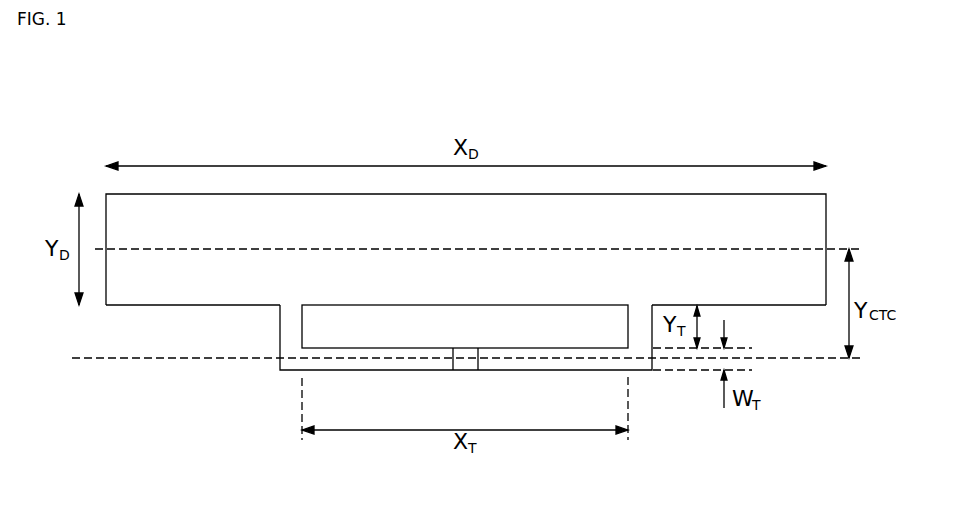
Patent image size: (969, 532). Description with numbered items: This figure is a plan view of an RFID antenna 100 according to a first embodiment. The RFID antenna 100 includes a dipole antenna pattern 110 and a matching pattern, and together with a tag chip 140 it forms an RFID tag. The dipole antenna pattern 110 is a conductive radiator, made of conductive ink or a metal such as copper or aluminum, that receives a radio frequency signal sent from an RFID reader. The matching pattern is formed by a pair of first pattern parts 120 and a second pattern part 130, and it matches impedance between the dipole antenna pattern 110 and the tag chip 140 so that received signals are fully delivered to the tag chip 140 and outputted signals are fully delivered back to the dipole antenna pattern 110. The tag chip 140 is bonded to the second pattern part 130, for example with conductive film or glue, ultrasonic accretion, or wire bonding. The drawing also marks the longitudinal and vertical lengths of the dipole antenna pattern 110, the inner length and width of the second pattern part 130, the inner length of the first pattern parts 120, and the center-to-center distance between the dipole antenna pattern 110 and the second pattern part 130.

The RFID antenna 100 is at (98, 96).
The dipole antenna pattern 110 is at (152, 293).
The first pattern parts 120 is at (290, 331).
The second pattern part 130 is at (565, 360).
The tag chip 140 is at (467, 368).